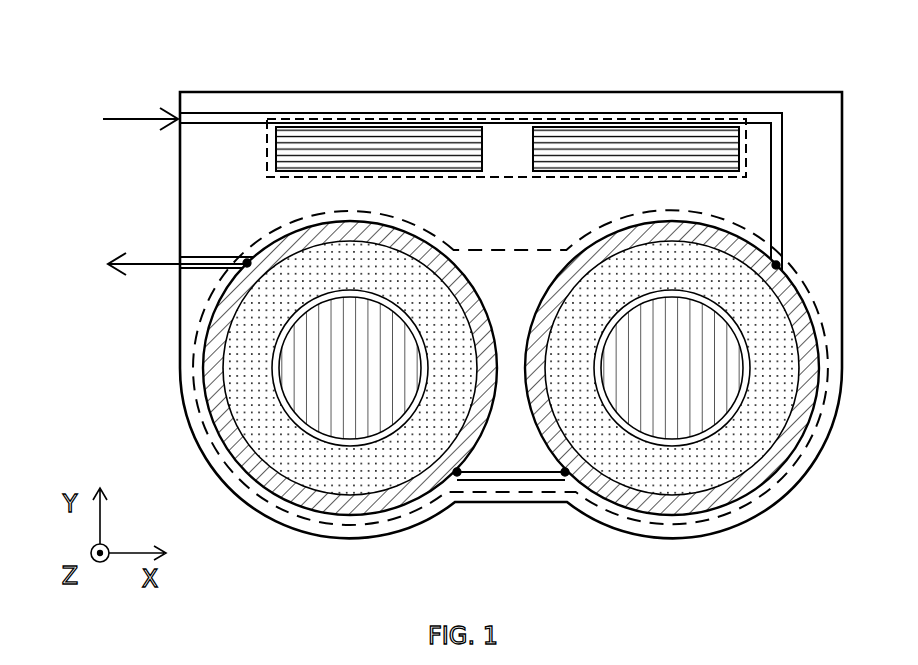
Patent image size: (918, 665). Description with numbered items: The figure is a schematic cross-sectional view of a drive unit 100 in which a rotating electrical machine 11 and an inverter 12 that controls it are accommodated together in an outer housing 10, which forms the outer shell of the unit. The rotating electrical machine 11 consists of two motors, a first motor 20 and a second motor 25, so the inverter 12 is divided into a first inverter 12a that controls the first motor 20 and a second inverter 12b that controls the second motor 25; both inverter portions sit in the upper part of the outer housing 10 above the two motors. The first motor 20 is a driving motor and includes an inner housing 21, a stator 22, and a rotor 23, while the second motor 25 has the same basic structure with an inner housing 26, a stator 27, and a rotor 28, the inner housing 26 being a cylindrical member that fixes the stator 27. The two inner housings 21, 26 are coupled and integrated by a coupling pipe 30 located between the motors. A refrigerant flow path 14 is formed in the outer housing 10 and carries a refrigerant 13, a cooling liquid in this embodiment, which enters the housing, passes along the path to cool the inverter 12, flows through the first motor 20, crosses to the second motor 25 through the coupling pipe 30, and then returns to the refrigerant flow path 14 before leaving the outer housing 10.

The drive unit 100 is at (219, 82).
The outer housing 10 is at (293, 92).
The rotating electrical machine 11 is at (190, 337).
The inverter 12 is at (502, 180).
The first inverter 12a is at (585, 175).
The second inverter 12b is at (444, 175).
The refrigerant 13 is at (138, 116).
The refrigerant flow path 14 is at (505, 112).
The first motor 20 is at (787, 462).
The inner housing 21 is at (657, 508).
The stator 22 is at (692, 483).
The rotor 23 is at (708, 418).
The second motor 25 is at (221, 445).
The inner housing 26 is at (357, 512).
The stator 27 is at (318, 477).
The rotor 28 is at (307, 398).
The coupling pipe 30 is at (508, 480).